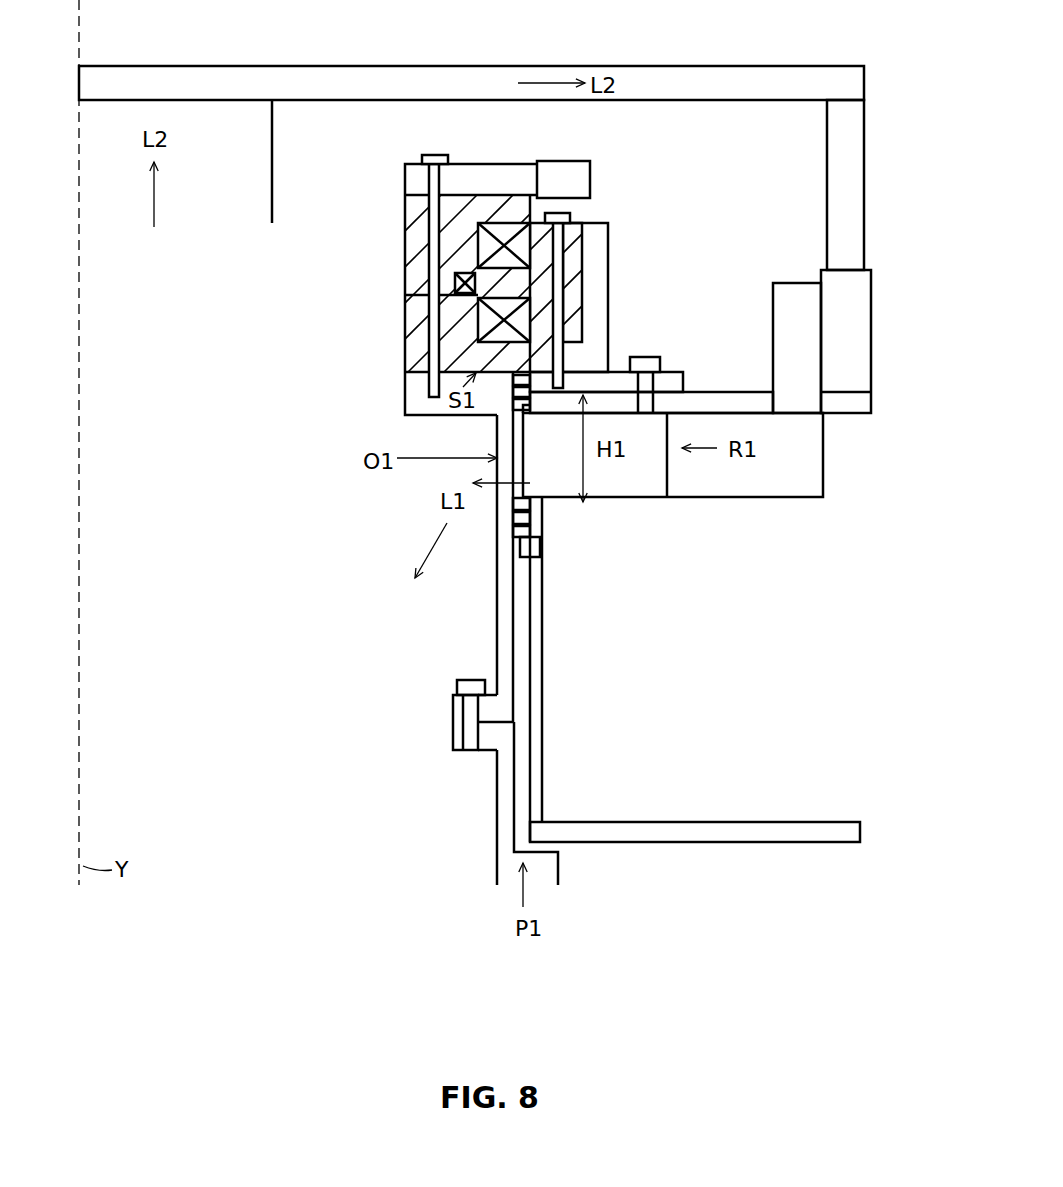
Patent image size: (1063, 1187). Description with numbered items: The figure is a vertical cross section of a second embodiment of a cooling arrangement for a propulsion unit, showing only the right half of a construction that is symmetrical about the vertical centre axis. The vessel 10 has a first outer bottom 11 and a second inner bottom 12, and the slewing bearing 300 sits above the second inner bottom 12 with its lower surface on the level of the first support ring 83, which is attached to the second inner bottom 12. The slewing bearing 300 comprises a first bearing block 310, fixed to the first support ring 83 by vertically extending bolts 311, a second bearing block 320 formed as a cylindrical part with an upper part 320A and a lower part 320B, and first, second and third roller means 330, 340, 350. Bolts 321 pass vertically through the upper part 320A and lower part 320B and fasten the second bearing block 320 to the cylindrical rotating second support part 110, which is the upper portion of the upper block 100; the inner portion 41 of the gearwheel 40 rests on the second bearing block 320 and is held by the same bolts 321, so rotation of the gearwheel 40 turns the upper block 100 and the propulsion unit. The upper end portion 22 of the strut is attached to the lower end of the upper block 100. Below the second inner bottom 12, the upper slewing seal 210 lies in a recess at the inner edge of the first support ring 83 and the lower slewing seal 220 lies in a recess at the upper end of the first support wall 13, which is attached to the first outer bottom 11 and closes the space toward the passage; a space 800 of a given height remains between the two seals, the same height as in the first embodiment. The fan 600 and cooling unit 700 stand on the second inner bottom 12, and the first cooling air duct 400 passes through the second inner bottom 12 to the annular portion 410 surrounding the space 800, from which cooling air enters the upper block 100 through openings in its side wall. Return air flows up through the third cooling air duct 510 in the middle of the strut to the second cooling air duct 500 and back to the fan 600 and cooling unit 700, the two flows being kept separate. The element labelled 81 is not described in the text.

The second cooling air duct 500 is at (737, 75).
The third cooling air duct 510 is at (252, 194).
The vessel 10 is at (740, 166).
The fan 600 is at (868, 349).
The cooling unit 700 is at (792, 295).
The second inner bottom 12 is at (712, 402).
The first support ring 83 is at (680, 378).
The first cooling air duct 400 is at (673, 482).
The annular portion 410 is at (650, 488).
The space 800 is at (563, 467).
The upper slewing seal 210 is at (502, 391).
The lower slewing seal 220 is at (548, 523).
The upper block 100 is at (497, 612).
The upper end portion 22 is at (502, 820).
The first support wall 13 is at (545, 639).
The first outer bottom 11 is at (822, 832).
The second support part 110 is at (420, 408).
The slewing bearing 300 is at (478, 253).
The second bearing block 320 is at (478, 283).
The upper part 320A is at (420, 220).
The lower part 320B is at (410, 360).
The bolts 321 is at (428, 383).
The first bearing block 310 is at (568, 291).
The permanent magnet 81 is at (598, 272).
The bolts 311 is at (560, 363).
The inner portion 41 is at (413, 172).
The first roller means 330 is at (508, 235).
The second roller means 340 is at (483, 323).
The third roller means 350 is at (457, 287).
The gearwheel 40 is at (567, 168).